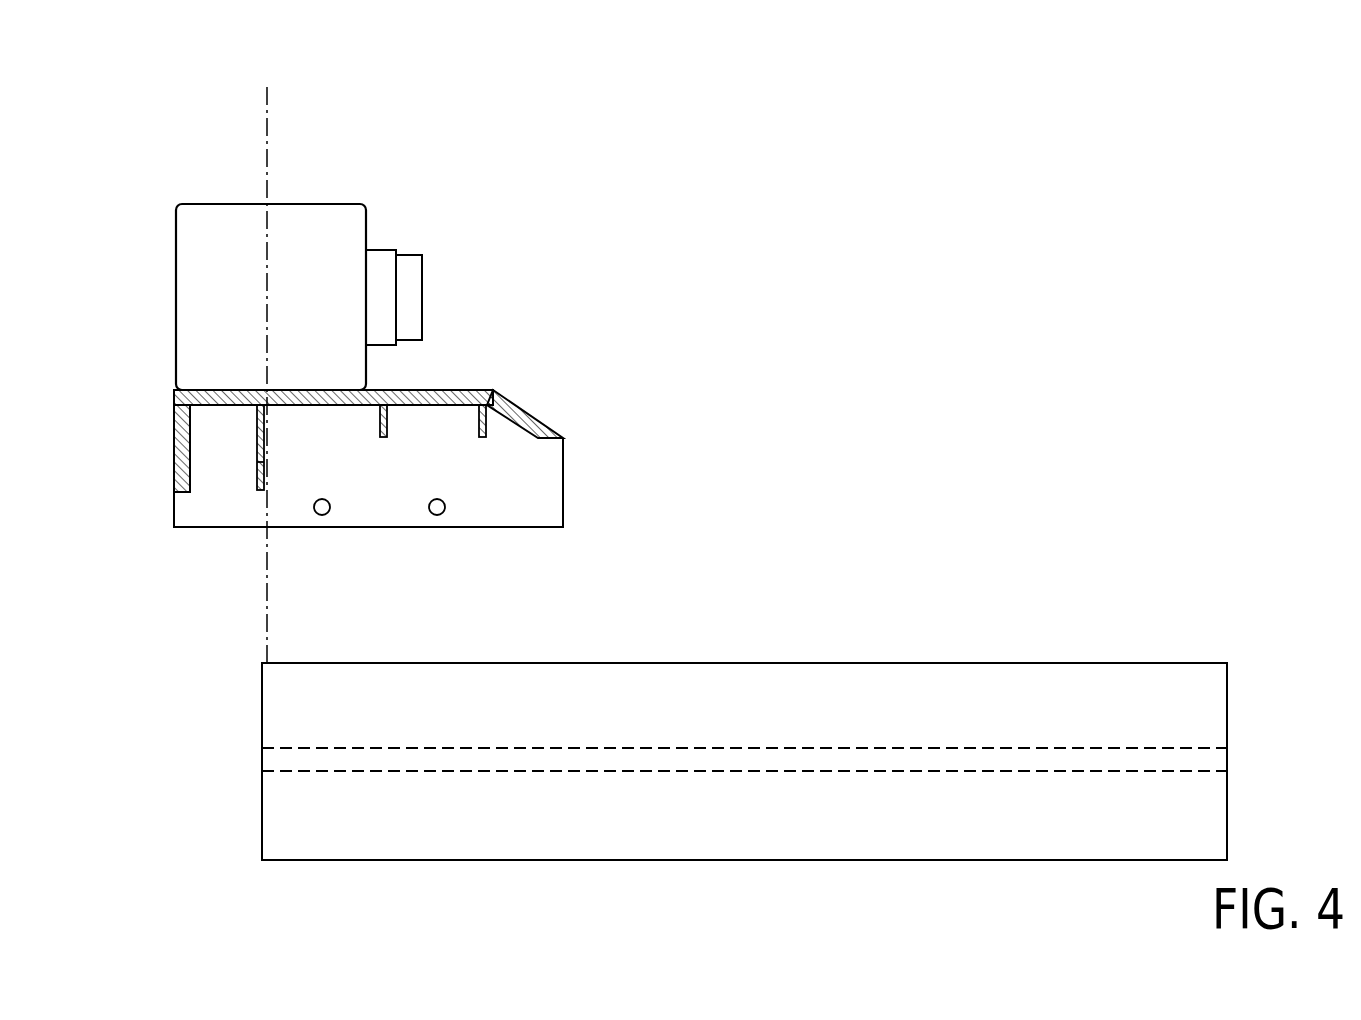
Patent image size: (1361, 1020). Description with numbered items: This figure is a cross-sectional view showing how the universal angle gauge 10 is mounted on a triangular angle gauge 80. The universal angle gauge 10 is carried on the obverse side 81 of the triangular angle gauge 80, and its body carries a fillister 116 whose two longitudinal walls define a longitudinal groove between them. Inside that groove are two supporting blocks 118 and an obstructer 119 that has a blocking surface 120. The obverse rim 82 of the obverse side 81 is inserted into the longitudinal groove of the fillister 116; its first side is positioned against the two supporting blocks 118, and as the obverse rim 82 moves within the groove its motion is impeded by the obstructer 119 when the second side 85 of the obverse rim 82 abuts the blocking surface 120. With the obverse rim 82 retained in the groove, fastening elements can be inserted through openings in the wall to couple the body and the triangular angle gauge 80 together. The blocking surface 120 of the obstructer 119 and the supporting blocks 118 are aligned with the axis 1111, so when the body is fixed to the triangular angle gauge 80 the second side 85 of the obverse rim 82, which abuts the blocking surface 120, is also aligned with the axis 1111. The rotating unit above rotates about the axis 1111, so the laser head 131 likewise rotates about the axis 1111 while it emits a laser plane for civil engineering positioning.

The axis 1111 is at (267, 113).
The universal angle gauge 10 is at (400, 168).
The laser head 131 is at (414, 283).
The fillister 116 is at (515, 473).
The supporting blocks 118 is at (385, 437).
The obstructer 119 is at (256, 462).
The blocking surface 120 is at (265, 462).
The triangular angle gauge 80 is at (788, 592).
The obverse side 81 is at (1075, 770).
The obverse rim 82 is at (940, 662).
The second side 85 is at (262, 680).